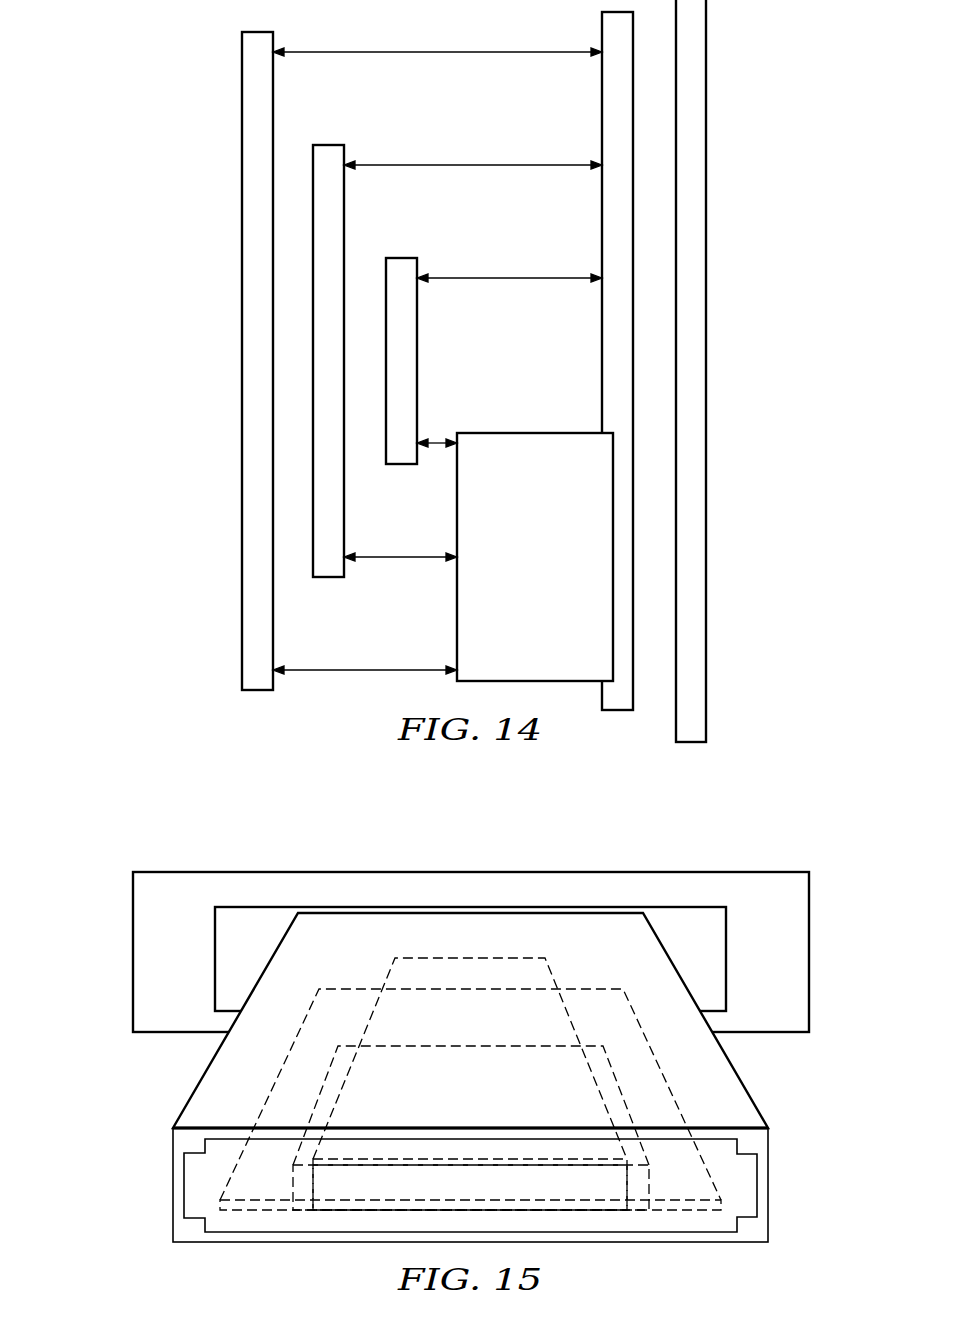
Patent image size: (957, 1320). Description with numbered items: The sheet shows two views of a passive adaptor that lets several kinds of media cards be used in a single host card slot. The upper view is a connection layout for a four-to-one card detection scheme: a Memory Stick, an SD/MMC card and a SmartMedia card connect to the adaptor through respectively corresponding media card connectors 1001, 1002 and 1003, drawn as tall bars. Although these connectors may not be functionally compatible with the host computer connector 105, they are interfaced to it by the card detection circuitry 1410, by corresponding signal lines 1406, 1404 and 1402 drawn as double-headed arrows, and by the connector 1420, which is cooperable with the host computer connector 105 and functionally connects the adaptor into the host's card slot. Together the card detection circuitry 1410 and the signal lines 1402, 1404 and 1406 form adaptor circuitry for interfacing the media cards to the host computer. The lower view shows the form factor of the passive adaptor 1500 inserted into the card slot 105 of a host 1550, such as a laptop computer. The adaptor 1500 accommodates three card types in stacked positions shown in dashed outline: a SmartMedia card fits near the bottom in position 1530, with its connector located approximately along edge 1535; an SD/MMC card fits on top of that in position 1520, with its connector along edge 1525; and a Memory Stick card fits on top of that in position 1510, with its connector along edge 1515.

In FIG. 14, the media card connector 1001 is at (403, 258).
In FIG. 14, the media card connector 1002 is at (333, 145).
In FIG. 14, the media card connector 1003 is at (242, 361).
In FIG. 14, the signal line 1402 is at (397, 52).
In FIG. 14, the signal line 1404 is at (469, 165).
In FIG. 14, the signal line 1406 is at (511, 278).
In FIG. 14, the card detection circuitry 1410 is at (562, 613).
In FIG. 14, the connector 1420 is at (601, 348).
In FIG. 14, the card slot 105 is at (706, 360).
In FIG. 15, the card slot 105 is at (726, 958).
In FIG. 15, the passive adaptor 1500 is at (748, 1093).
In FIG. 15, the position 1510 is at (413, 1159).
In FIG. 15, the edge 1515 is at (548, 968).
In FIG. 15, the position 1520 is at (518, 1165).
In FIG. 15, the edge 1525 is at (475, 1046).
In FIG. 15, the position 1530 is at (262, 1212).
In FIG. 15, the edge 1535 is at (351, 989).
In FIG. 15, the host 1550 is at (132, 950).